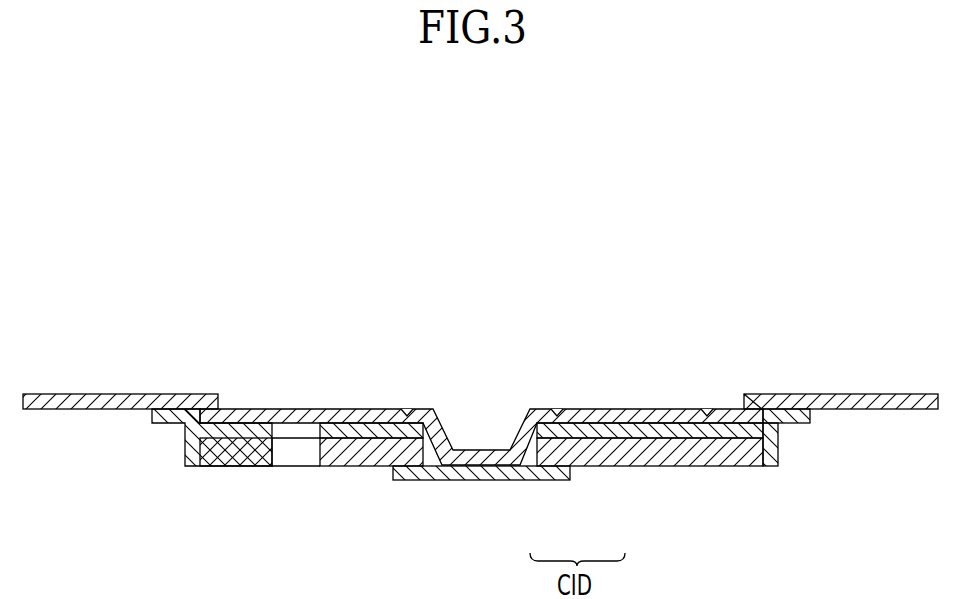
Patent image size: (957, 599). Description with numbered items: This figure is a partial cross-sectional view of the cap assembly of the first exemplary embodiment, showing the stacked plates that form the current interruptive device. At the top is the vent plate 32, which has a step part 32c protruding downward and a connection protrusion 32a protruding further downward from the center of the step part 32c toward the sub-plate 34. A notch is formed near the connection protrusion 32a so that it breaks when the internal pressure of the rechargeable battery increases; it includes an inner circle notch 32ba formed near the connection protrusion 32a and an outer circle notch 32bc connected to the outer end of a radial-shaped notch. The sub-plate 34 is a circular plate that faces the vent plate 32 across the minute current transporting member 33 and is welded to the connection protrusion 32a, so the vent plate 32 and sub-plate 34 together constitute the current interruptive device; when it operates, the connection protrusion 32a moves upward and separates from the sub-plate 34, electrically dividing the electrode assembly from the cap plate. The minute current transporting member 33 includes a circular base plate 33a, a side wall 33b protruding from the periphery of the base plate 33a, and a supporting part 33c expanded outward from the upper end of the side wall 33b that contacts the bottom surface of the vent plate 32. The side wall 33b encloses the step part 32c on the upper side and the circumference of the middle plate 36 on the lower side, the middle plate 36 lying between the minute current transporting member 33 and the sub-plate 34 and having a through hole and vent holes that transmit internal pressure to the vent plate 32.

The vent plate 32 is at (613, 413).
The connection protrusion 32a is at (470, 452).
The inner circle notch 32ba is at (557, 412).
The outer circle notch 32bc is at (706, 411).
The step part 32c is at (733, 396).
The minute current transporting member 33 is at (226, 440).
The base plate 33a is at (680, 440).
The side wall 33b is at (770, 450).
The supporting part 33c is at (797, 418).
The sub-plate 34 is at (539, 468).
The middle plate 36 is at (357, 453).